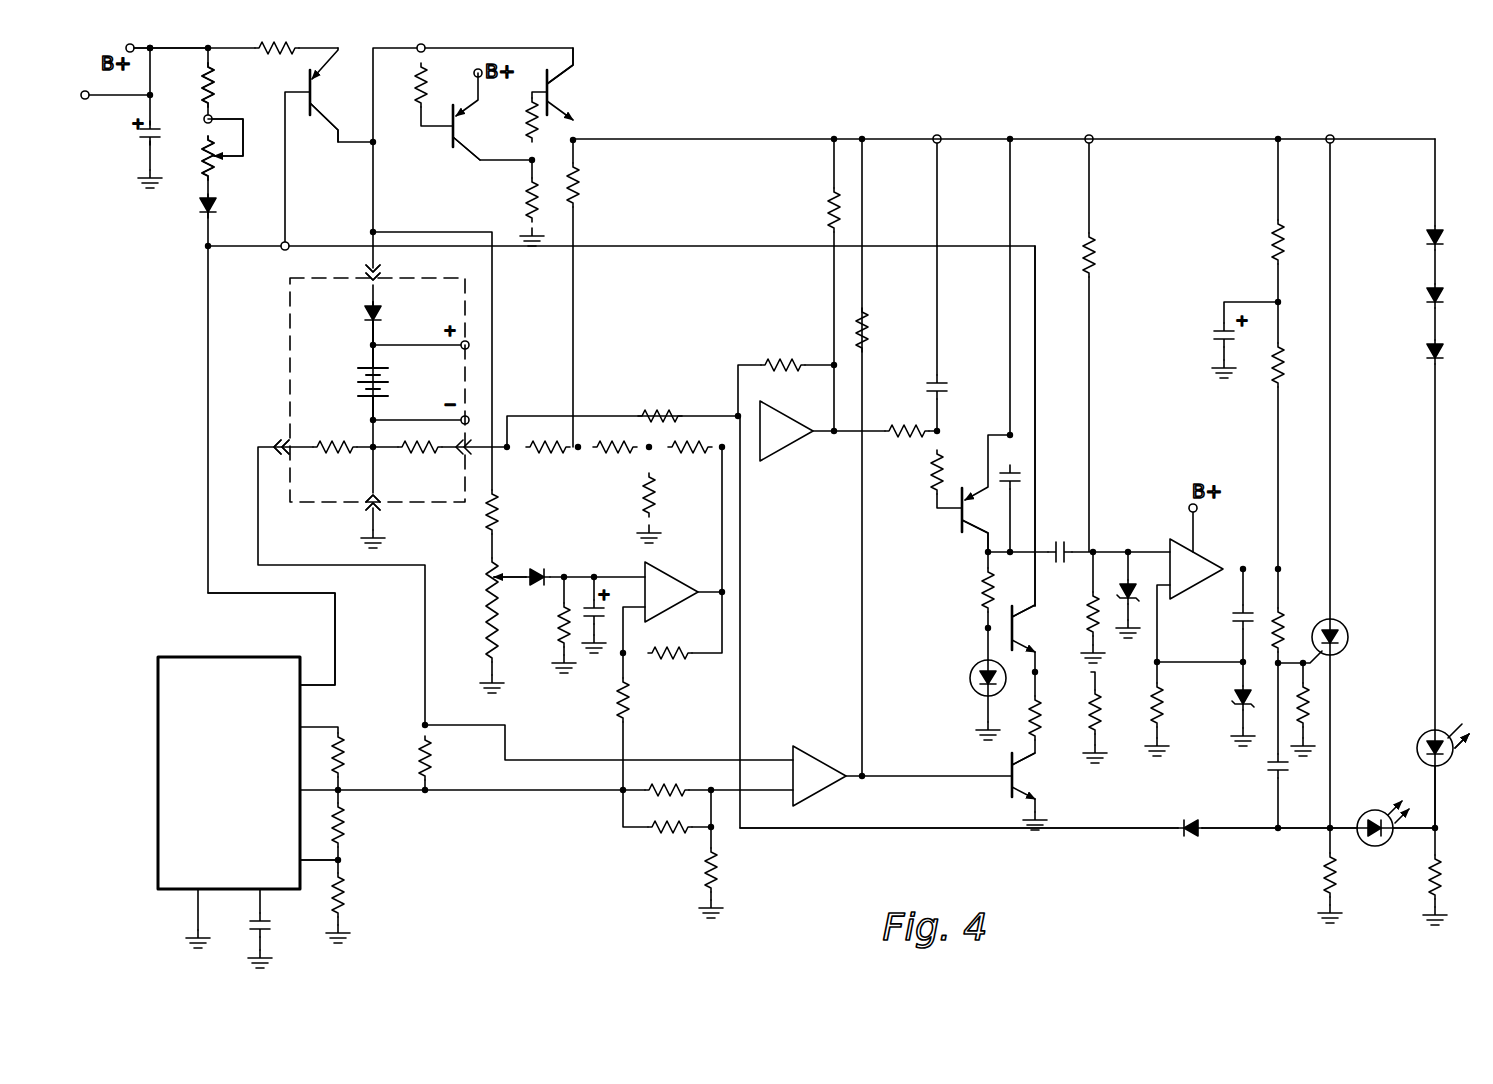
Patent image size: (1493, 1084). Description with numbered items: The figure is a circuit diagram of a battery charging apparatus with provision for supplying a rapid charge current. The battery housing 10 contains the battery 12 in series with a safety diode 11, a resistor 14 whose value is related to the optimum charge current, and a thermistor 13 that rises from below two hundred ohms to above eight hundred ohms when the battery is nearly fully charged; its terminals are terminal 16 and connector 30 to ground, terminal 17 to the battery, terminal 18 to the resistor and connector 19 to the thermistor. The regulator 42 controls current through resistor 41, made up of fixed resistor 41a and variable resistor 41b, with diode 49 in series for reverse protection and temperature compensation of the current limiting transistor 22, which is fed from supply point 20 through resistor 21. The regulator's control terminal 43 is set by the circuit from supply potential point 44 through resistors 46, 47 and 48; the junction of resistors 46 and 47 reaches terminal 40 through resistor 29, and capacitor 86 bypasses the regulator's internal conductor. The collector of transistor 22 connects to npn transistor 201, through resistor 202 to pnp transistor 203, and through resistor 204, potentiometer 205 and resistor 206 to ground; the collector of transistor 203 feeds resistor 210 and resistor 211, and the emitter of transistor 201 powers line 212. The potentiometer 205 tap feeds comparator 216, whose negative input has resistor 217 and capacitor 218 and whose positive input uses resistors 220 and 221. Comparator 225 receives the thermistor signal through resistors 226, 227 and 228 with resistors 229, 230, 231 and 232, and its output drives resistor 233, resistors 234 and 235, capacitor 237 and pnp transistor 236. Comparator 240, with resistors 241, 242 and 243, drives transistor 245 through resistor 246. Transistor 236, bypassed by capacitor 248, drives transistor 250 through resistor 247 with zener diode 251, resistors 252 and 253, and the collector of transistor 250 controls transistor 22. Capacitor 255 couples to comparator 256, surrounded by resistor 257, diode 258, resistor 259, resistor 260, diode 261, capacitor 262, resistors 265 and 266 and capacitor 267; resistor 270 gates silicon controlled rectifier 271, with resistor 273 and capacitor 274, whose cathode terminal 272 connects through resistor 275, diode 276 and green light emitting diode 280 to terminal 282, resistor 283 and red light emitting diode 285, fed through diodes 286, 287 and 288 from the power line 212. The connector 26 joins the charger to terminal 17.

The battery housing 10 is at (288, 302).
The diode 11 is at (382, 316).
The battery proper 12 is at (364, 372).
The thermistor 13 is at (438, 452).
The resistor 14 is at (348, 443).
The terminal 16 is at (372, 496).
The terminal 17 is at (377, 280).
The terminal 18 is at (290, 451).
The connector 19 is at (464, 443).
The supply point 20 is at (154, 52).
The resistor 21 is at (284, 54).
The current limiting transistor 22 is at (322, 100).
The connector 26 is at (385, 274).
The resistor 29 is at (432, 759).
The connector 30 is at (370, 507).
The terminal 40 is at (278, 444).
The resistor 41 is at (191, 150).
The fixed resistor 41a is at (214, 89).
The variable resistor 41b is at (218, 164).
The regulator 42 is at (158, 841).
The control terminal 43 is at (300, 859).
The supply potential point 44 is at (314, 684).
The resistor 46 is at (345, 757).
The resistor 47 is at (345, 826).
The resistor 48 is at (345, 897).
The diode 49 is at (216, 206).
The external capacitor 86 is at (272, 923).
The npn type transistor 201 is at (572, 90).
The resistor 202 is at (421, 96).
The pnp type transistor 203 is at (453, 140).
The resistor 204 is at (500, 517).
The potentiometer 205 is at (488, 575).
The resistor 206 is at (488, 622).
The resistor 210 is at (527, 200).
The resistor 211 is at (528, 122).
The power line 212 is at (980, 138).
The integrated circuit comparator 216 is at (670, 582).
The resistor 217 is at (562, 627).
The capacitor 218 is at (594, 600).
The resistor 220 is at (675, 660).
The resistor 221 is at (630, 707).
The second integrated circuit comparator 225 is at (800, 440).
The resistor 226 is at (688, 453).
The resistor 227 is at (615, 453).
The resistor 228 is at (552, 453).
The resistor 229 is at (658, 498).
The resistor 230 is at (579, 187).
The resistor 231 is at (670, 413).
The resistor 232 is at (794, 360).
The resistor 233 is at (828, 214).
The resistor 234 is at (908, 438).
The resistor 235 is at (933, 482).
The pnp type transistor 236 is at (975, 527).
The capacitor 237 is at (946, 385).
The third integrated circuit comparator 240 is at (808, 750).
The resistor 241 is at (718, 870).
The resistor 242 is at (686, 788).
The resistor 243 is at (660, 836).
The npn type transistor 245 is at (1048, 787).
The resistor 246 is at (868, 336).
The resistor 247 is at (982, 591).
The capacitor 248 is at (1020, 472).
The npn type transistor 250 is at (1030, 622).
The zener diode 251 is at (974, 668).
The resistor 252 is at (1105, 732).
The resistor 253 is at (1045, 737).
The capacitor 255 is at (1060, 542).
The fourth integrated circuit comparator 256 is at (1210, 562).
The resistor 257 is at (1088, 632).
The diode 258 is at (1131, 606).
The resistor 259 is at (1097, 262).
The resistor 260 is at (1165, 702).
The diode 261 is at (1235, 692).
The capacitor 262 is at (1234, 620).
The resistor 265 is at (1272, 372).
The resistor 266 is at (1270, 242).
The capacitor 267 is at (1215, 332).
The resistor 270 is at (1285, 616).
The silicon controlled rectifier 271 is at (1350, 637).
The terminal 272 is at (1328, 826).
The resistor 273 is at (1312, 722).
The capacitor 274 is at (1268, 769).
The resistor 275 is at (1322, 882).
The diode 276 is at (1190, 838).
The light emitting diode 280 is at (1375, 847).
The second terminal 282 is at (1432, 824).
The resistor 283 is at (1428, 882).
The second light emitting diode 285 is at (1415, 752).
The diode 286 is at (1425, 352).
The diode 287 is at (1425, 296).
The diode 288 is at (1425, 238).